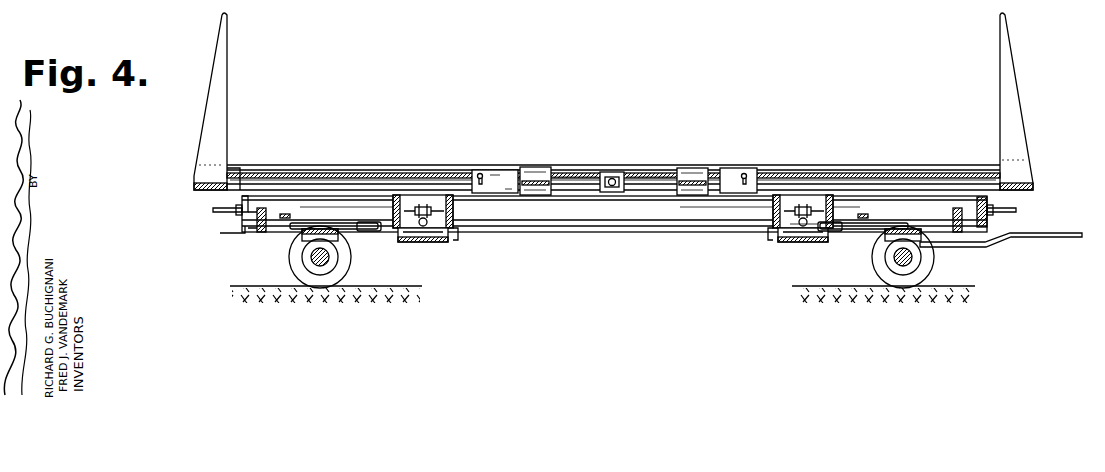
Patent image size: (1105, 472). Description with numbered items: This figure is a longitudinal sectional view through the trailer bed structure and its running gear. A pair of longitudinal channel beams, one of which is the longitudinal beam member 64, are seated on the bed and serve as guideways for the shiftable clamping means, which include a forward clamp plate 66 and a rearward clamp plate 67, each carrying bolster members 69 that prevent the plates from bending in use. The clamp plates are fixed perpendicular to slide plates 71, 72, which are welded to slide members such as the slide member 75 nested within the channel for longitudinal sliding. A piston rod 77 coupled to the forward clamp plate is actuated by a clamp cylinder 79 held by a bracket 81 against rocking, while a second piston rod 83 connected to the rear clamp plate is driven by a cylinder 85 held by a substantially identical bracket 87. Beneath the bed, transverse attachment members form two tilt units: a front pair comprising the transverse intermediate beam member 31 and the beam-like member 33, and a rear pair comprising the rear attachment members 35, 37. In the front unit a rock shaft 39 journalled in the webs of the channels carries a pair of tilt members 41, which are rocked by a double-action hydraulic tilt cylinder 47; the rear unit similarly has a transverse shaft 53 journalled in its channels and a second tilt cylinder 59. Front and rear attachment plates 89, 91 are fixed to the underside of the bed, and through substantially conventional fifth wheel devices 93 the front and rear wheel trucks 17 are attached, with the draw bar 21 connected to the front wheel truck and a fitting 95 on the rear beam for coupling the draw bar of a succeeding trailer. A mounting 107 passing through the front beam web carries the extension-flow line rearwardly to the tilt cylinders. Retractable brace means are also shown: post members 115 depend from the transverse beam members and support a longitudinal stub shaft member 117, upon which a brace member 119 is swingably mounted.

The wheel truck 17 is at (351, 262).
The draw bar 21 is at (1016, 239).
The transverse intermediate beam member 31 is at (773, 210).
The structural beam-like member 33 is at (833, 208).
The rear attachment member 35 is at (393, 207).
The rear attachment member 37 is at (453, 210).
The shaft 39 is at (791, 205).
The tilt member 41 is at (441, 200).
The cylinder 47 is at (768, 233).
The transverse shaft 53 is at (409, 204).
The cylinder 59 is at (803, 233).
The longitudinal beam member 64 is at (300, 168).
The forward clamp plate 66 is at (1000, 90).
The rearward clamp plate 67 is at (228, 104).
The bolster member 69 is at (200, 158).
The slide plate 71 is at (1035, 184).
The slide plate 72 is at (193, 180).
The slide member 75 is at (232, 172).
The piston rod 77 is at (858, 177).
The cylinder 79 is at (667, 177).
The bracket 81 is at (688, 173).
The piston rod 83 is at (340, 176).
The cylinder 85 is at (516, 177).
The bracket 87 is at (527, 170).
The front attachment plate 89 is at (862, 222).
The rear attachment plate 91 is at (305, 214).
The fifth wheel device 93 is at (292, 231).
The fitting 95 is at (233, 233).
The mounting 107 is at (238, 212).
The post member 115 is at (457, 238).
The stub shaft member 117 is at (437, 240).
The brace member 119 is at (427, 243).